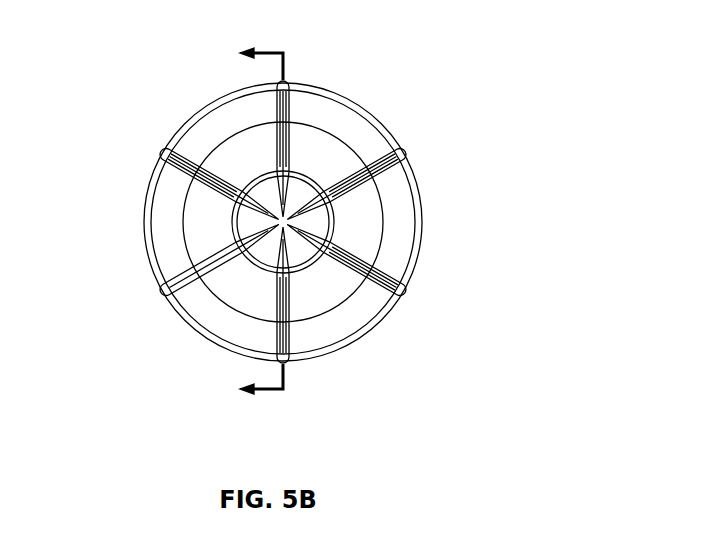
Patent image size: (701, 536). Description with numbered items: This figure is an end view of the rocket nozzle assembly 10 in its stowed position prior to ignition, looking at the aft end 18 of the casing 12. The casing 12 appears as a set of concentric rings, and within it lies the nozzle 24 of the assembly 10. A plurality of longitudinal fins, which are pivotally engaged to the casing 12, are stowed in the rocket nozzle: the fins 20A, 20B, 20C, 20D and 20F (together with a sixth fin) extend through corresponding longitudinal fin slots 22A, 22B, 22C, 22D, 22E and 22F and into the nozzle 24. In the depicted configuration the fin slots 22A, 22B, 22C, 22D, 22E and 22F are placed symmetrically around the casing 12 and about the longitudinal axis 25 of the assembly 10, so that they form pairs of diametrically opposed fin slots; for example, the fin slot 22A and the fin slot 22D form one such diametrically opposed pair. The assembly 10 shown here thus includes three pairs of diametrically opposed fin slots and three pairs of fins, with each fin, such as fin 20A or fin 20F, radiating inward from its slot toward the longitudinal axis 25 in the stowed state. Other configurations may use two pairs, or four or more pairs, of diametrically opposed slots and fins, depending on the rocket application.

The rocket nozzle assembly 10 is at (446, 69).
The casing 12 is at (362, 107).
The aft end 18 is at (210, 100).
The nozzle 24 is at (283, 222).
The longitudinal axis 25 is at (276, 227).
The fin slot 22A is at (290, 80).
The fin slot 22B is at (406, 152).
The fin slot 22C is at (408, 293).
The fin slot 22D is at (292, 364).
The fin slot 22E is at (162, 293).
The fin slot 22F is at (160, 152).
The longitudinal fin 20A is at (295, 162).
The longitudinal fin 20B is at (378, 181).
The longitudinal fin 20C is at (356, 252).
The longitudinal fin 20D is at (296, 300).
The longitudinal fin 20F is at (215, 165).